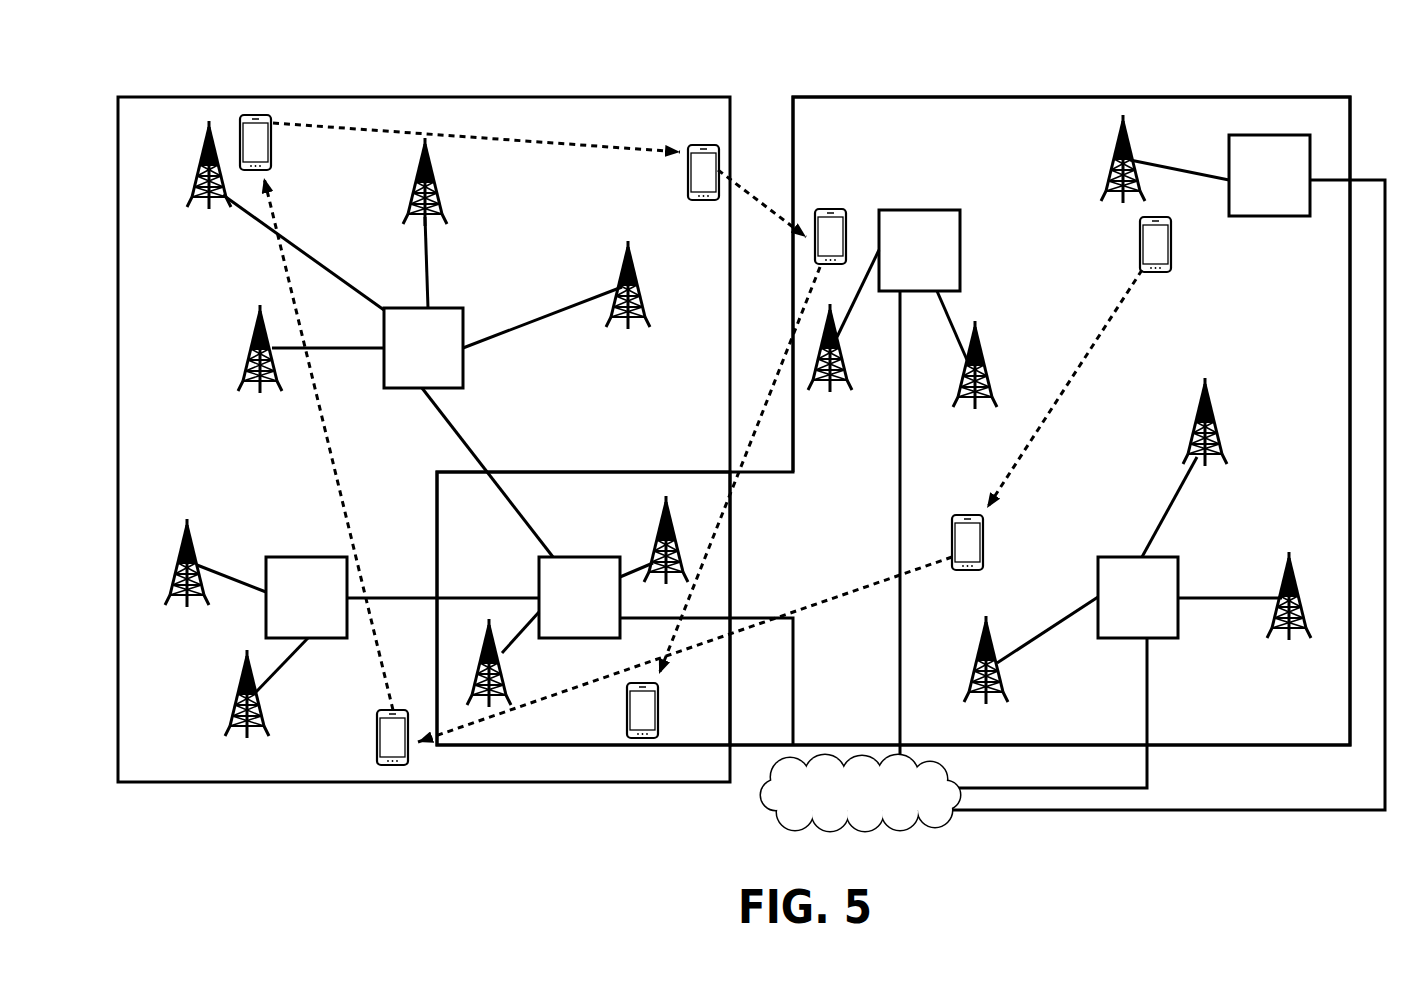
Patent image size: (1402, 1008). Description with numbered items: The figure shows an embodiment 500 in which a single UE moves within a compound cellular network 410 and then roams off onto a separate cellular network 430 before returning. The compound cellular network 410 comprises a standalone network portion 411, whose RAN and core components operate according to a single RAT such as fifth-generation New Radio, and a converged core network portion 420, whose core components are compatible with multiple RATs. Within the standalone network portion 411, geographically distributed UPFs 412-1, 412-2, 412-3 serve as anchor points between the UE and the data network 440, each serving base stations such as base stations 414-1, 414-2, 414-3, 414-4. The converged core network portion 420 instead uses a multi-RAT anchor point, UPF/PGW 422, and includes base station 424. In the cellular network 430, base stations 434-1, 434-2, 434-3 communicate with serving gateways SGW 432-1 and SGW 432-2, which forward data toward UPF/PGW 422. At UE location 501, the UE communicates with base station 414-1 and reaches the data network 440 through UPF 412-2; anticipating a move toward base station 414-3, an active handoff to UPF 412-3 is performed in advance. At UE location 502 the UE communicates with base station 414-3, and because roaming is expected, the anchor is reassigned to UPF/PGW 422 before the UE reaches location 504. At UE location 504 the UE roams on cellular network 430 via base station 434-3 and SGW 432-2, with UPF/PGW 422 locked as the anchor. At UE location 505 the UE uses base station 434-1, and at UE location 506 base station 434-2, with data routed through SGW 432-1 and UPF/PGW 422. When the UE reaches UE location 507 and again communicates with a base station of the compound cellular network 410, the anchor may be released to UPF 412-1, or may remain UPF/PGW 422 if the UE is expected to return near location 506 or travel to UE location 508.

The embodiment 500 is at (155, 58).
The cellular network 430 is at (679, 136).
The compound cellular network 410 is at (1305, 95).
The standalone network portion 411 is at (807, 135).
The converged core network portion 420 is at (679, 739).
The serving gateway (SGW) 432-1 is at (423, 308).
The serving gateway (SGW) 432-2 is at (298, 557).
The UPF/PGW 422 is at (607, 557).
The base station 424 is at (652, 528).
The UPF 412-1 is at (947, 208).
The UPF 412-2 is at (1252, 217).
The UPF 412-3 is at (1108, 557).
The base station 414-1 is at (1117, 170).
The base station 414-2 is at (1200, 410).
The base station 414-3 is at (980, 653).
The base station 414-4 is at (968, 398).
The base station 434-1 is at (207, 147).
The base station 434-2 is at (623, 275).
The base station 434-3 is at (238, 693).
The UE location 501 is at (1143, 250).
The UE location 502 is at (977, 515).
The UE location 504 is at (407, 750).
The UE location 505 is at (272, 157).
The UE location 506 is at (688, 177).
The UE location 507 is at (830, 208).
The UE location 508 is at (629, 742).
The data network 440 is at (848, 821).